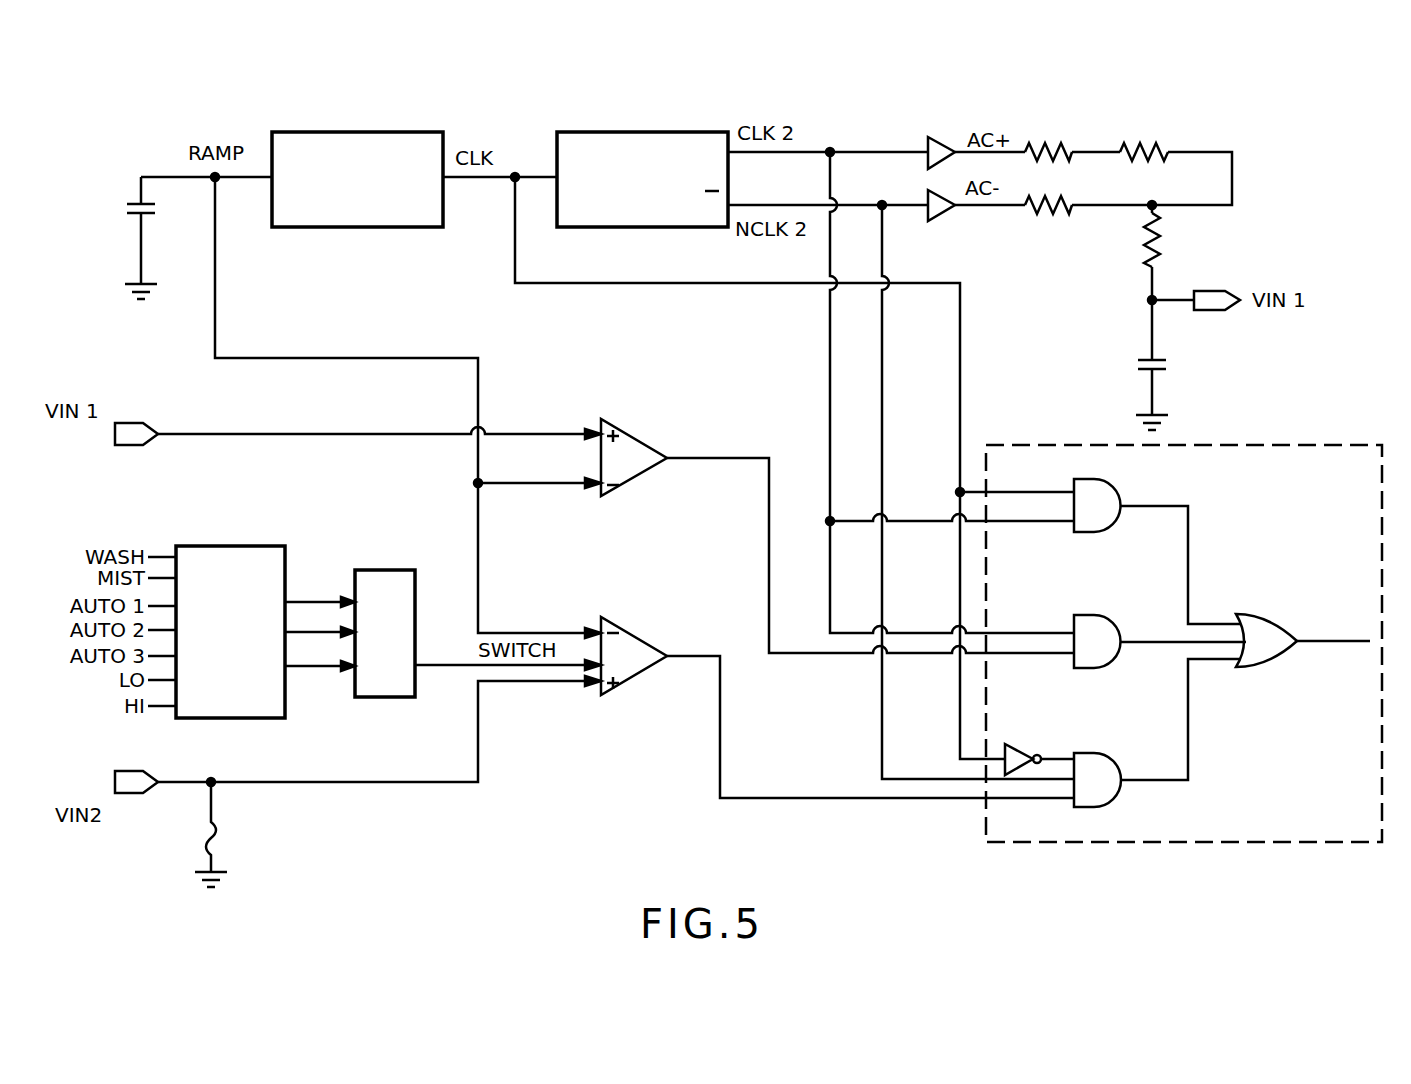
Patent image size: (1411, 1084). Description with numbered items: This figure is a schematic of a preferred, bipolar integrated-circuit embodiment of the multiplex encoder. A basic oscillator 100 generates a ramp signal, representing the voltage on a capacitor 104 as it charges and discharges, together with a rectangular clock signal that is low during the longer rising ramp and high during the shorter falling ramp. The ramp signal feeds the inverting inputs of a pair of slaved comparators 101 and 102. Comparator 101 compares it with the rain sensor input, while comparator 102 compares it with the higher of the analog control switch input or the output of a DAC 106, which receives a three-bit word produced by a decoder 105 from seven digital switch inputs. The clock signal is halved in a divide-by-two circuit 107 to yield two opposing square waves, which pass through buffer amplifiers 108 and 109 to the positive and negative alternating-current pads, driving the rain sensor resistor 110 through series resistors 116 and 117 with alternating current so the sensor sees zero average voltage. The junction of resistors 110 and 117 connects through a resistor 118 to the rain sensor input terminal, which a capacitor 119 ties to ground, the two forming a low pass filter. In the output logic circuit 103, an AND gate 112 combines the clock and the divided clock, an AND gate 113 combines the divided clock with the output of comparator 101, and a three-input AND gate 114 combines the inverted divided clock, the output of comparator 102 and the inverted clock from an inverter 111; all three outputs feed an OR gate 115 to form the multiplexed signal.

The oscillator 100 is at (402, 136).
The comparator 101 is at (620, 443).
The comparator 102 is at (622, 670).
The output logic circuit 103 is at (1252, 430).
The capacitor 104 is at (128, 208).
The decoder 105 is at (210, 553).
The digital to analog converter (DAC) 106 is at (380, 578).
The divide-by-two (DIV/2) circuit 107 is at (688, 138).
The buffer amplifier 108 is at (940, 150).
The buffer amplifier 109 is at (938, 210).
The rain sensor resistor 110 is at (1150, 148).
The inverter 111 is at (1015, 760).
The AND gate 112 is at (1102, 500).
The AND gate 113 is at (1097, 637).
The AND gate 114 is at (1097, 773).
The OR gate 115 is at (1256, 635).
The series resistor 116 is at (1040, 148).
The series resistor 117 is at (1055, 209).
The resistor 118 is at (1158, 252).
The capacitor 119 is at (1148, 360).